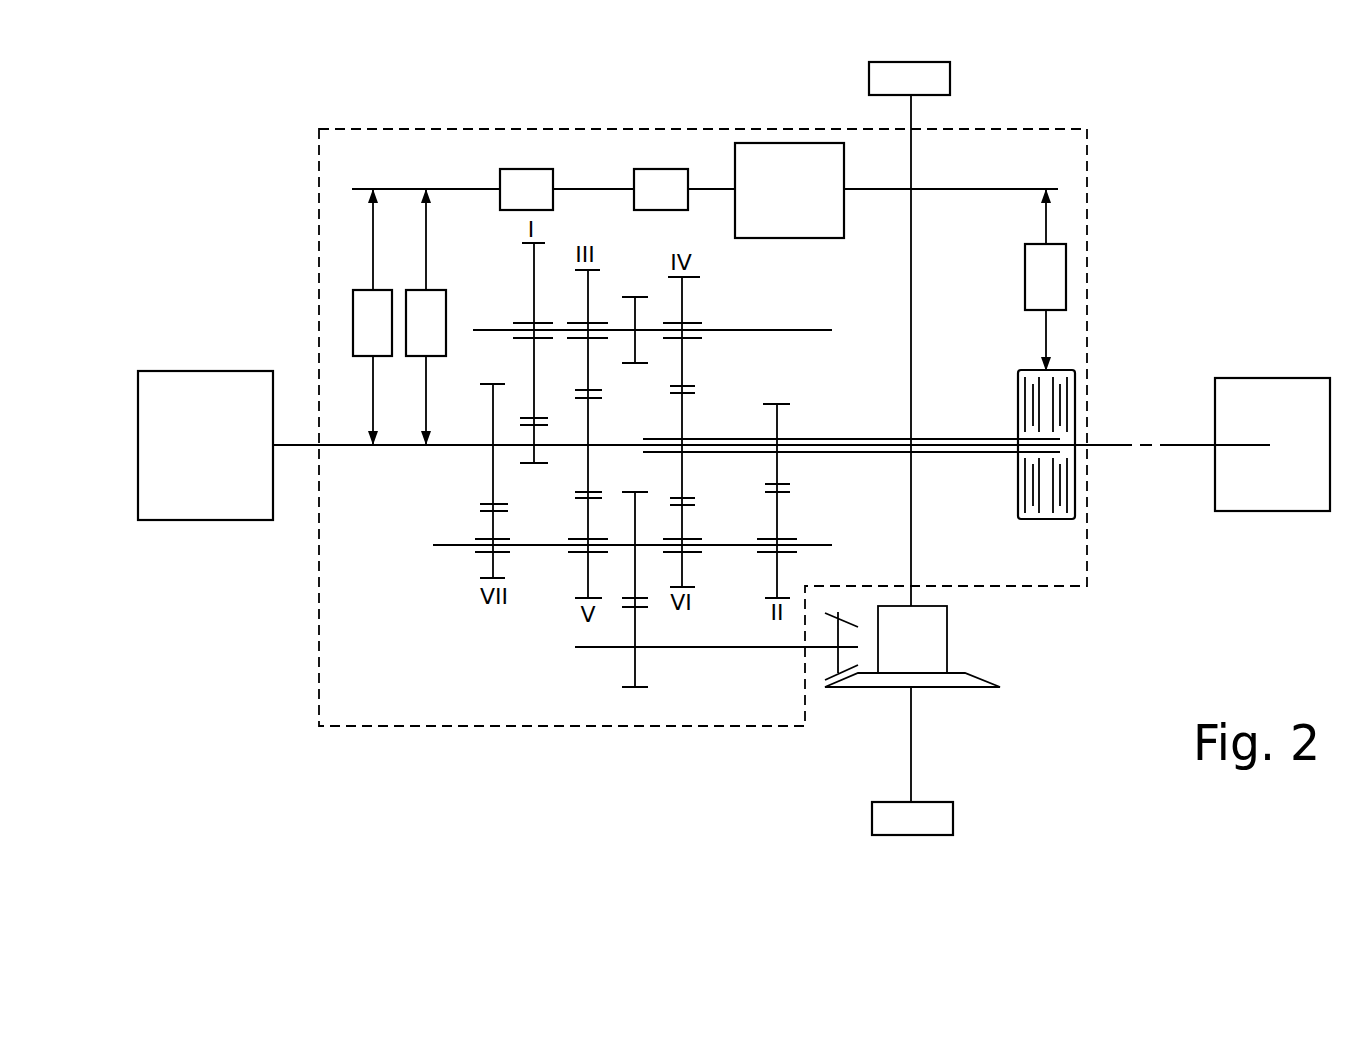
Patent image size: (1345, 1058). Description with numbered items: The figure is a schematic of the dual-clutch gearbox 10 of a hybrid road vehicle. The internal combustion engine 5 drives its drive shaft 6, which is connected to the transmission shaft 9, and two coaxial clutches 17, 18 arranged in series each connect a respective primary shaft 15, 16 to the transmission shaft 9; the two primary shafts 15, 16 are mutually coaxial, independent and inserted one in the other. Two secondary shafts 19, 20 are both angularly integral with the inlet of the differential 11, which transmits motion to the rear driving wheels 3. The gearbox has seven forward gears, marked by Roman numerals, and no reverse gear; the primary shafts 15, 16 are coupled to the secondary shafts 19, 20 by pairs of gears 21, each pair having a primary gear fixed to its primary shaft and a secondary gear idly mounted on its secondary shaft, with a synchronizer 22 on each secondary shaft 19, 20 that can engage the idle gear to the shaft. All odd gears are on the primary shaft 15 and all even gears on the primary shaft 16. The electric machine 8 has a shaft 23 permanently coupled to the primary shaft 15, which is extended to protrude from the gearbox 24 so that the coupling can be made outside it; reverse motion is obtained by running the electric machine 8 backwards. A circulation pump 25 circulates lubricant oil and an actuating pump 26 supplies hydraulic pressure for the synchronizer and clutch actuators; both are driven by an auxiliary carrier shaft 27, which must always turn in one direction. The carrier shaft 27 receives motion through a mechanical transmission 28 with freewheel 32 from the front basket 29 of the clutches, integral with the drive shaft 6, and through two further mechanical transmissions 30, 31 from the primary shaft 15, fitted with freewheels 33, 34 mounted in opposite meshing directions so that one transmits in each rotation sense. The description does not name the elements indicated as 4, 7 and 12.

The rear driving wheels 3 is at (911, 448).
The drive train 4 is at (1147, 604).
The internal combustion engine 5 is at (1272, 444).
The drive shaft 6 is at (1255, 445).
The hybrid drive 7 is at (1238, 164).
The electric machine 8 is at (205, 445).
The transmission shaft 9 is at (1113, 445).
The dual-clutch gearbox 10 is at (441, 768).
The differential 11 is at (1003, 651).
The axle shaft 12 is at (912, 107).
The primary shaft 15 is at (456, 445).
The primary shaft 16 is at (855, 439).
The clutch 17 is at (1051, 431).
The clutch 18 is at (1027, 528).
The secondary shaft 19 is at (484, 330).
The secondary shaft 20 is at (530, 547).
The pair of gears 21 is at (498, 296).
The synchronizer 22 is at (537, 326).
The shaft 23 is at (311, 445).
The gearbox 24 is at (572, 727).
The circulation pump 25 is at (684, 189).
The actuating pump 26 is at (789, 190).
The auxiliary carrier shaft 27 is at (1014, 190).
The mechanical transmission 28 is at (1070, 277).
The front basket 29 is at (1024, 369).
The mechanical transmission 30 is at (410, 223).
The mechanical transmission 31 is at (357, 219).
The freewheel 32 is at (1045, 277).
The freewheel 33 is at (493, 262).
The freewheel 34 is at (372, 323).